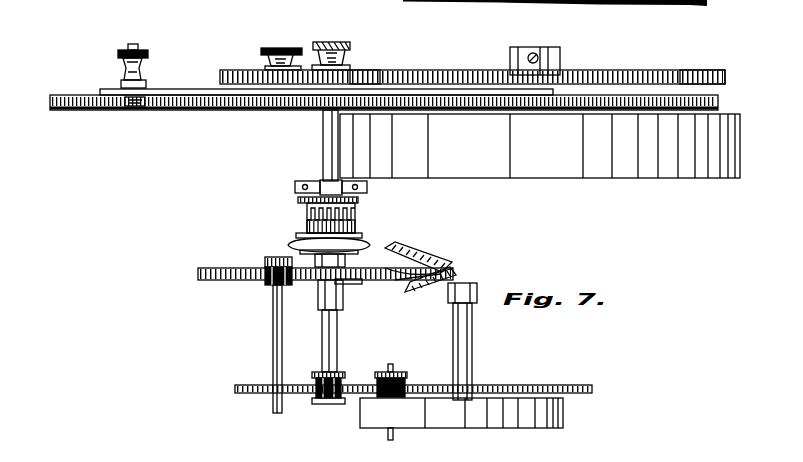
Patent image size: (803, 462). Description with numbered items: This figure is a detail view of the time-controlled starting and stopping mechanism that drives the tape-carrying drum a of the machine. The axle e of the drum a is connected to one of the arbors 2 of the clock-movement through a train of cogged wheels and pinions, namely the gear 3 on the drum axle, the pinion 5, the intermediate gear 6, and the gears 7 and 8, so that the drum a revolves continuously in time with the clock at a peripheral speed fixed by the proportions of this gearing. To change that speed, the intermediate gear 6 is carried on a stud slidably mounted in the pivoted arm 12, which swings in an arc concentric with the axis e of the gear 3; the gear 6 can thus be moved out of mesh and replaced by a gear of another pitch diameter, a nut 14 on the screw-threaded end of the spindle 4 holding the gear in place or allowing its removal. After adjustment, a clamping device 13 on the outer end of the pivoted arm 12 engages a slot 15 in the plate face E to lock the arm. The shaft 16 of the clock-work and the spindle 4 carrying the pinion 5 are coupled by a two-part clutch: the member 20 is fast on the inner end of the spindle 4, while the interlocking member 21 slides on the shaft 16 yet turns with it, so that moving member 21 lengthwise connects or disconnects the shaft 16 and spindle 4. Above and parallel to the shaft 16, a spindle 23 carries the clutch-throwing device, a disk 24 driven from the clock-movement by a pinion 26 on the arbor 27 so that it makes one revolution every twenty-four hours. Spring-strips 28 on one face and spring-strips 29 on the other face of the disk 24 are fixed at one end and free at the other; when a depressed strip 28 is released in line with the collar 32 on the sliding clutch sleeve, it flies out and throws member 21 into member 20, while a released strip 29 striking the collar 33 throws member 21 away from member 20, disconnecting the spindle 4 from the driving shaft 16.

The clamping device 13 is at (148, 55).
The pivoted arm 12 is at (168, 89).
The intermediate gear 6 is at (228, 70).
The pinion 5 is at (362, 70).
The gear 3 is at (700, 71).
The nut 14 is at (322, 42).
The axle of the drum e is at (537, 47).
The slot 15 is at (132, 107).
The plate face E is at (246, 110).
The spindle 4 is at (322, 156).
The drum a is at (708, 180).
The clutch member 20 is at (298, 200).
The slidable clutch member 21 is at (307, 229).
The collar 32 is at (296, 248).
The disk 24 is at (220, 280).
The pinion 26 is at (268, 287).
The arbor 27 is at (272, 353).
The collar 33 is at (337, 283).
The spindle 23 is at (341, 292).
The shaft of the clock-work 16 is at (338, 344).
The gear 7 is at (318, 404).
The gear 8 is at (360, 394).
The arbor of the clock-movement 2 is at (474, 356).
The spring-strips 28 is at (447, 265).
The spring-strips 29 is at (366, 279).